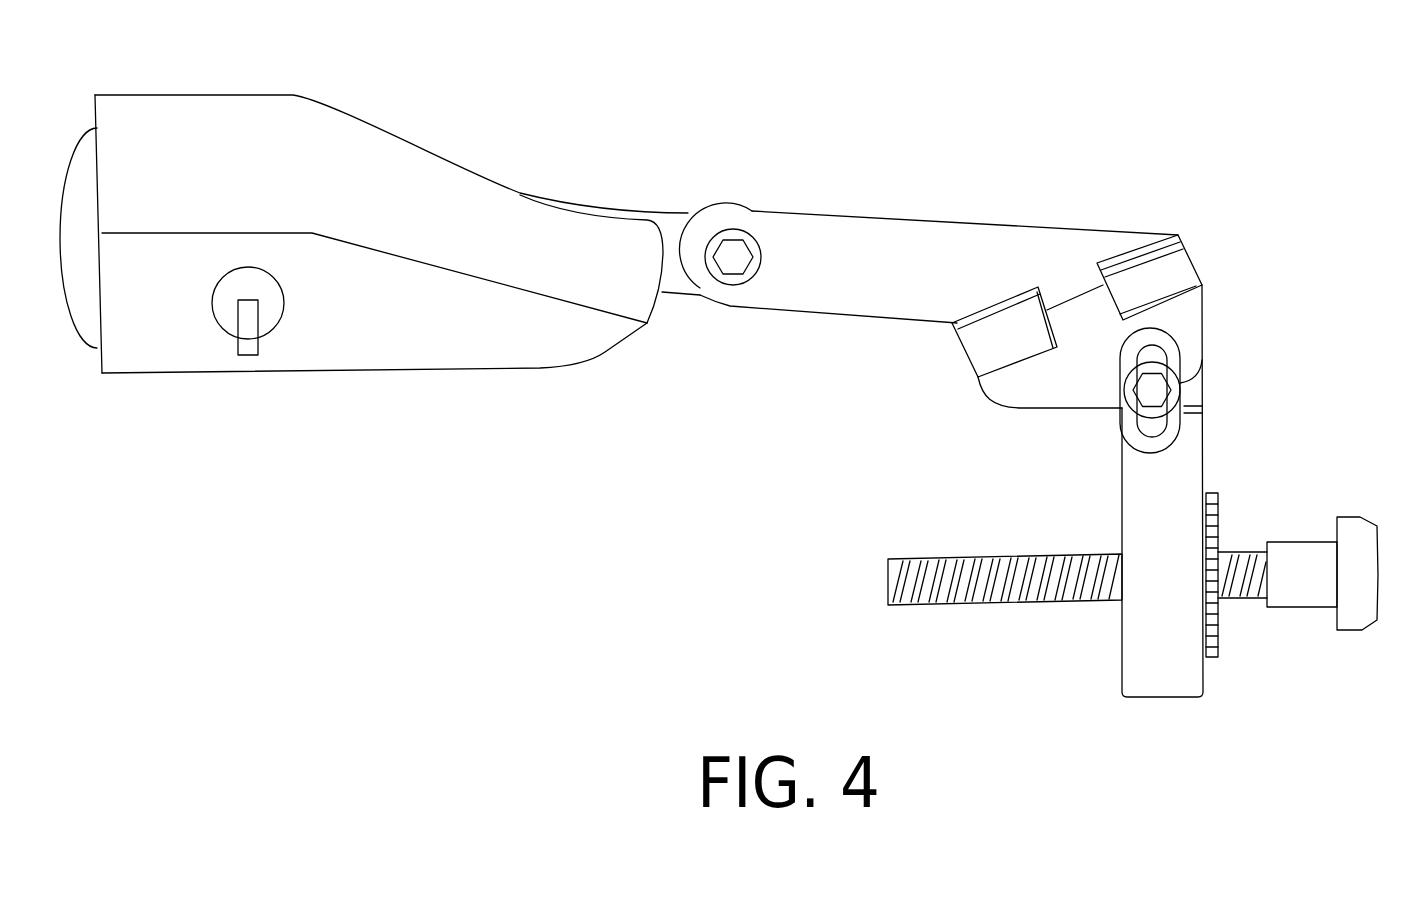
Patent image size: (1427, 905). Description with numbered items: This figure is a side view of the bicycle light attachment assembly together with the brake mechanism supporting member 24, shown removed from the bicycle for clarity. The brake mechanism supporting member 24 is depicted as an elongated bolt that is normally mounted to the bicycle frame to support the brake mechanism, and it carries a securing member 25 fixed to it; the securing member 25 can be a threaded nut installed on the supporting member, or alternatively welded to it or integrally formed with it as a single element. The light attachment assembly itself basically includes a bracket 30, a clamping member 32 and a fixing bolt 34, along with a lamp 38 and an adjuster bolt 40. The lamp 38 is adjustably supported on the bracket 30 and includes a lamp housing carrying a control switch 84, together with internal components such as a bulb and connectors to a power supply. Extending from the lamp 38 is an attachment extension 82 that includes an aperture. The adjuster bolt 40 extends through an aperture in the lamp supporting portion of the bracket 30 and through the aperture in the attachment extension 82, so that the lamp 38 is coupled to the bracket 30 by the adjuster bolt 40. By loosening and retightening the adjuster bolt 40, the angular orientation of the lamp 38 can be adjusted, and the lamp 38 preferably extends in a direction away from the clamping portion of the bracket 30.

The lamp 38 is at (385, 148).
The control switch 84 is at (270, 322).
The attachment extension 82 is at (670, 218).
The adjuster bolt 40 is at (748, 247).
The bracket 30 is at (1048, 242).
The clamping member 32 is at (1182, 475).
The fixing bolt 34 is at (1155, 390).
The brake mechanism supporting member 24 is at (1307, 550).
The securing member 25 is at (1218, 648).